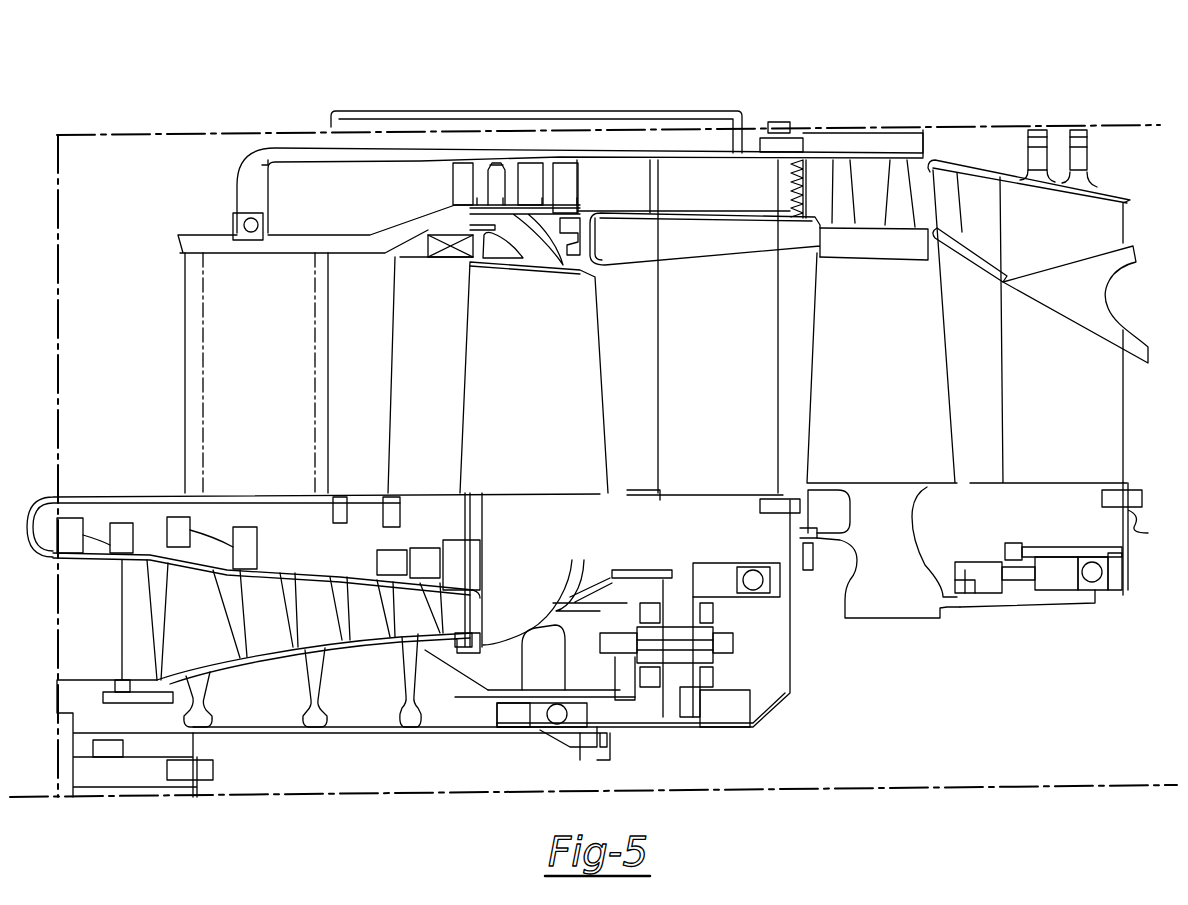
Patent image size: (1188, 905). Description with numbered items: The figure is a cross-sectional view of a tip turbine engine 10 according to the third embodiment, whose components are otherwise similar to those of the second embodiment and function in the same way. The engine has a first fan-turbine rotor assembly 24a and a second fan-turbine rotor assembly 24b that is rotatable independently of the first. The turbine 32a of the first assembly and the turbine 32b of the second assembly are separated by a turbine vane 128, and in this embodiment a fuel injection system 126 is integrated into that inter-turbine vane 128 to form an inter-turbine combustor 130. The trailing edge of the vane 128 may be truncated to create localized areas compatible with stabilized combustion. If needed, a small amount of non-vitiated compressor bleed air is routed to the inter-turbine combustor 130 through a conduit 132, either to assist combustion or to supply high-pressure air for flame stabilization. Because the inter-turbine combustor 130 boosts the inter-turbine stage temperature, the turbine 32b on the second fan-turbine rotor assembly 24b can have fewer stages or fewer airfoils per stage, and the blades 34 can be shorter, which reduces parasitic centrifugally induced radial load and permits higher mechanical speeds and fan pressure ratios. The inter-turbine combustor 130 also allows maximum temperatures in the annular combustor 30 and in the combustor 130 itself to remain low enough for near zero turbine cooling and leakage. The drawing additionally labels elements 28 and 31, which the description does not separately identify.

The tip turbine engine 10 is at (155, 127).
The annular combustor 30 is at (305, 165).
The conduit 132 is at (383, 112).
The blades 34 is at (563, 182).
The turbine 32a is at (588, 186).
The fuel injection system 126 is at (780, 122).
The inter-turbine combustor 130 is at (810, 126).
The turbine vane 128 is at (803, 190).
The first fan-turbine rotor assembly 24a is at (440, 365).
The fan blade 28 is at (460, 437).
The strut 31 is at (778, 305).
The second fan-turbine rotor assembly 24b is at (960, 385).
The turbine 32b is at (932, 125).